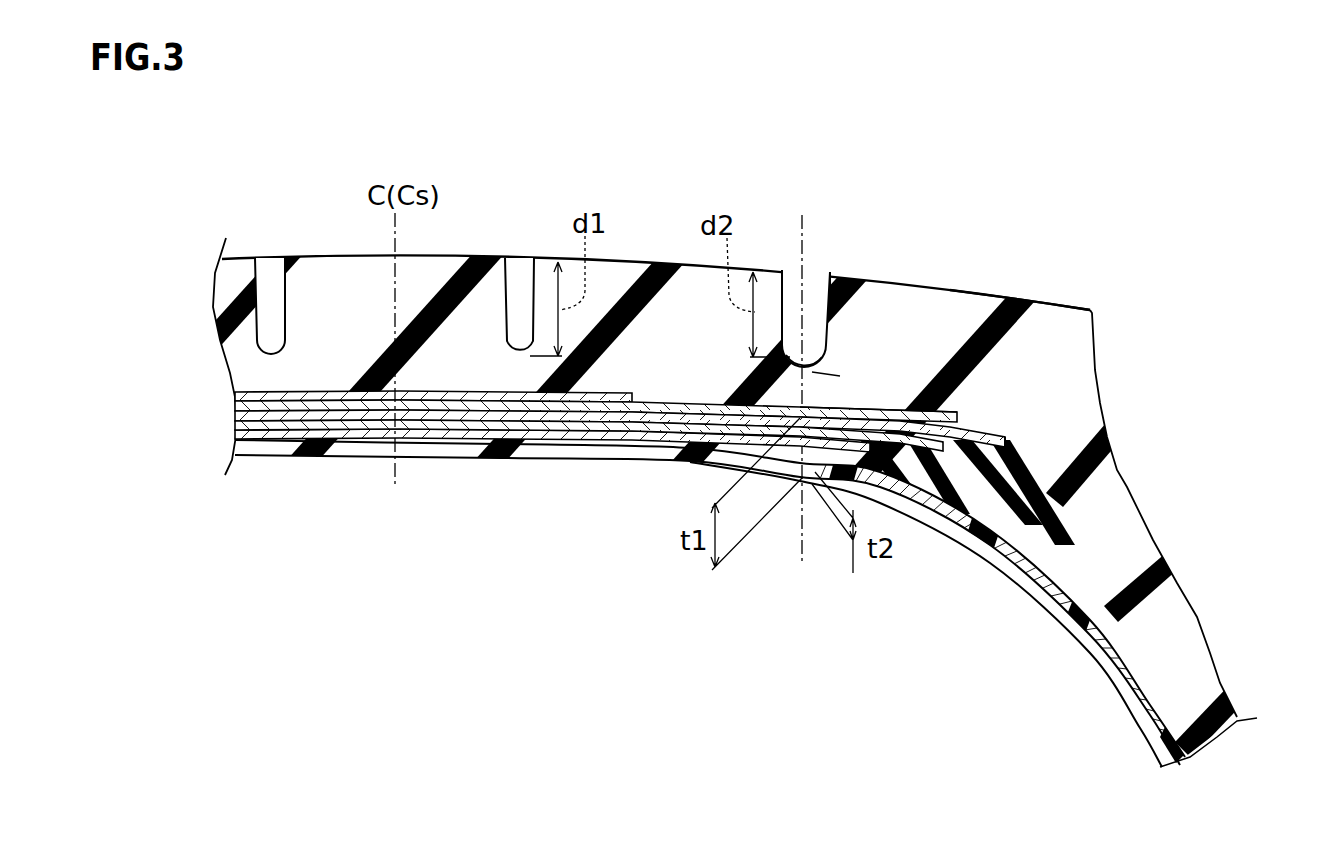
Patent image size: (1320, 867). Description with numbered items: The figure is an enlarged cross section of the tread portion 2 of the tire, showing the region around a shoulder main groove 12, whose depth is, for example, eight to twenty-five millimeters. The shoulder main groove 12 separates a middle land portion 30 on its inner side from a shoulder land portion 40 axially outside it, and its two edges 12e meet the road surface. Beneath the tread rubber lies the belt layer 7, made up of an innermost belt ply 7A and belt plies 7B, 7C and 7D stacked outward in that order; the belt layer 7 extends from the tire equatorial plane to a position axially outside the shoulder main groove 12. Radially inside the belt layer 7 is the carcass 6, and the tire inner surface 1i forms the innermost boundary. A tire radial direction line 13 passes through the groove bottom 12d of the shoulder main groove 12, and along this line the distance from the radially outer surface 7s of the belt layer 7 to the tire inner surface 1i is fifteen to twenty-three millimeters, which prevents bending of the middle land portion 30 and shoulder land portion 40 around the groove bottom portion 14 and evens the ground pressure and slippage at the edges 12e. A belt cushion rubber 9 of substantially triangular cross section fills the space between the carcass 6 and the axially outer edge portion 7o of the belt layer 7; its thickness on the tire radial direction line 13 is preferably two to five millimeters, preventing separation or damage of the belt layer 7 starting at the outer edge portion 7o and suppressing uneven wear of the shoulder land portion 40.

The tread portion 2 is at (452, 257).
The middle land portion 30 is at (633, 260).
The shoulder main groove 12 is at (817, 297).
The edge of the shoulder main groove 12e is at (783, 272).
The tire radial direction line 13 is at (804, 373).
The groove bottom 12d is at (809, 368).
The groove bottom portion 14 is at (826, 372).
The shoulder land portion 40 is at (996, 292).
The radially outer surface of the belt layer 7s is at (863, 413).
The axially outer edge portion of the belt layer 7o is at (1008, 434).
The belt cushion rubber 9 is at (1017, 527).
The tire inner surface 1i is at (997, 567).
The carcass 6 is at (1057, 588).
The belt layer 7 is at (684, 418).
The innermost belt ply 7A is at (275, 433).
The belt ply 7B is at (300, 424).
The belt ply 7C is at (322, 414).
The belt ply 7D is at (378, 402).